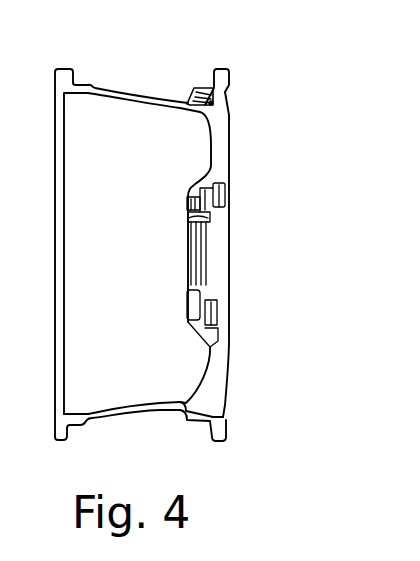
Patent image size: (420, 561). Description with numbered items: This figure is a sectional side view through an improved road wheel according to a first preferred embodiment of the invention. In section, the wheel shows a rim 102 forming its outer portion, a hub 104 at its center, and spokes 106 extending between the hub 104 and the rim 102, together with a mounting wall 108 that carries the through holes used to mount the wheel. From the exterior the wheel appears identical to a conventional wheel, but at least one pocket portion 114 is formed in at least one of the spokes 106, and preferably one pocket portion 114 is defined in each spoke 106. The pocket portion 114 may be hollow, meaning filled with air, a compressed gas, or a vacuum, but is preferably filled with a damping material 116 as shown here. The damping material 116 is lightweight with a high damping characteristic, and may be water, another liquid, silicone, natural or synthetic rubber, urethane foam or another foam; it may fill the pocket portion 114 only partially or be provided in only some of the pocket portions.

The rim 102 is at (115, 91).
The hub 104 is at (237, 236).
The spokes 106 is at (223, 128).
The mounting wall 108 is at (222, 212).
The pocket portion 114 is at (227, 106).
The damping material 116 is at (199, 105).